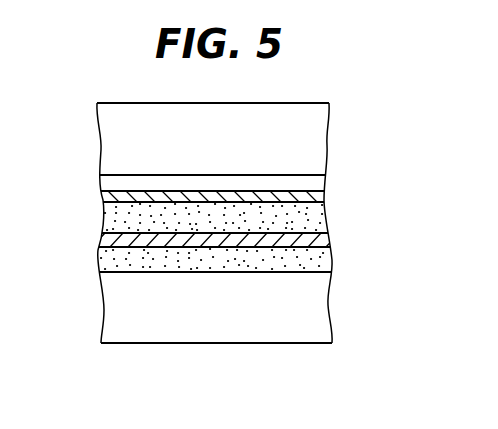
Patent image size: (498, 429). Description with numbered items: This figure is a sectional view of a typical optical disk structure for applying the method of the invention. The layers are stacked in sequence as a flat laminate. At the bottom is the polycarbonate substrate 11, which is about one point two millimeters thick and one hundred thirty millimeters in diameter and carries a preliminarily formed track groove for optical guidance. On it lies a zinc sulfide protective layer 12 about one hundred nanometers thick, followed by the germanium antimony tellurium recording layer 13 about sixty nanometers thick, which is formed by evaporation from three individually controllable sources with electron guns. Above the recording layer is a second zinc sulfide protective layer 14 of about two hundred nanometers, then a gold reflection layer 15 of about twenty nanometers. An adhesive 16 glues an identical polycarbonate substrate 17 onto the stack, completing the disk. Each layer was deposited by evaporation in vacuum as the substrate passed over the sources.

The substrate 11 is at (322, 325).
The first adhesive layer 12 is at (322, 267).
The first metal layer 13 is at (325, 242).
The second adhesive layer 14 is at (317, 218).
The second metal layer 15 is at (317, 196).
The intermediate layer 16 is at (320, 182).
The top layer 17 is at (323, 117).